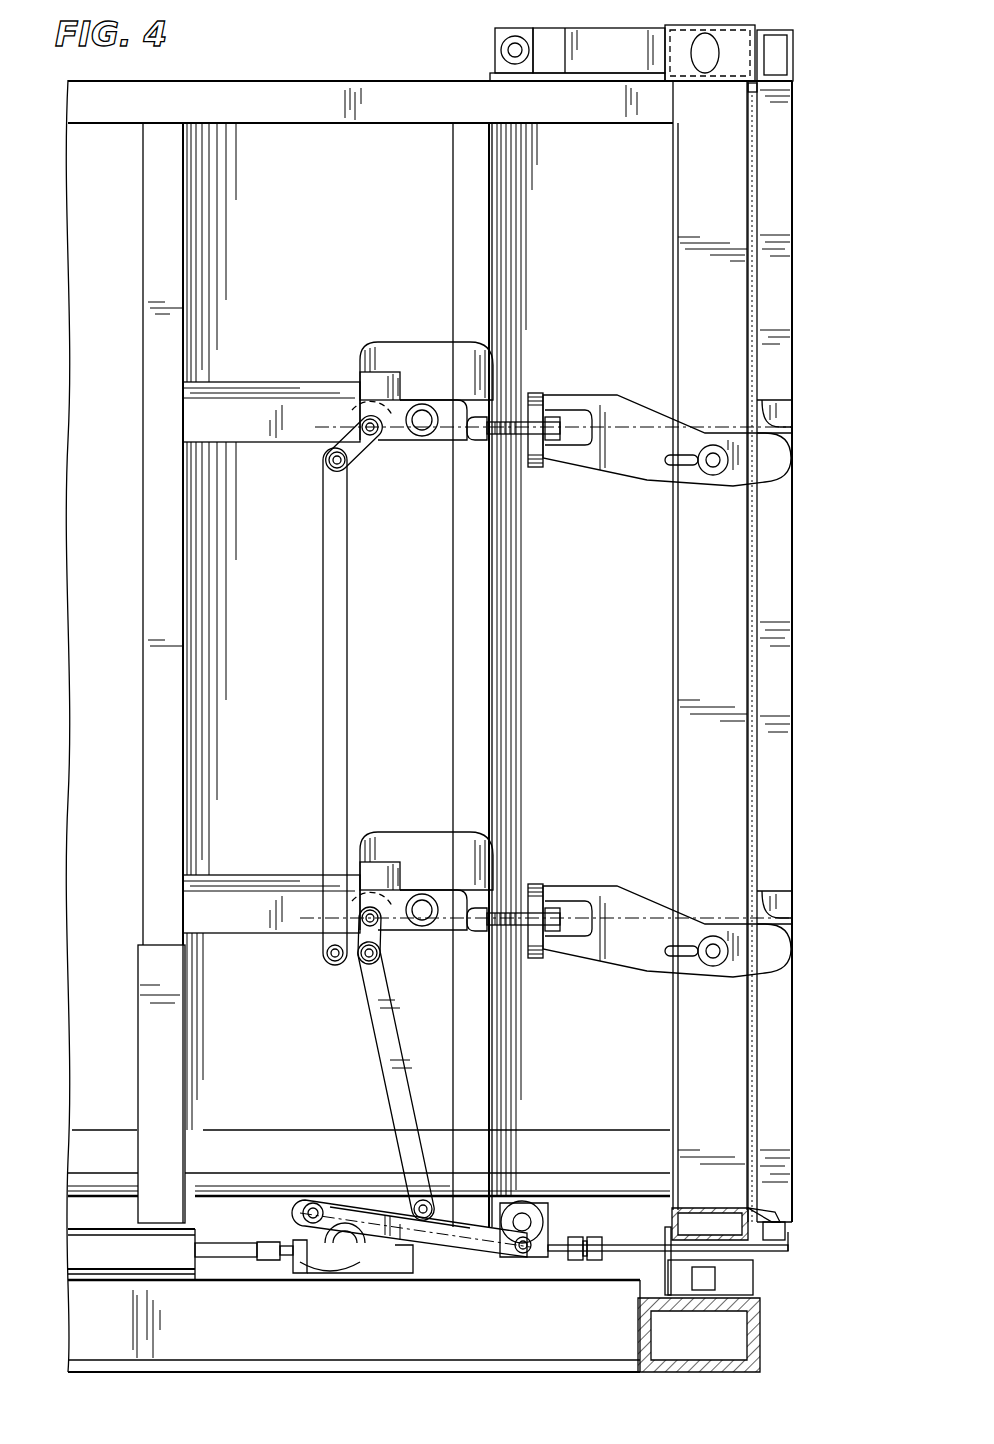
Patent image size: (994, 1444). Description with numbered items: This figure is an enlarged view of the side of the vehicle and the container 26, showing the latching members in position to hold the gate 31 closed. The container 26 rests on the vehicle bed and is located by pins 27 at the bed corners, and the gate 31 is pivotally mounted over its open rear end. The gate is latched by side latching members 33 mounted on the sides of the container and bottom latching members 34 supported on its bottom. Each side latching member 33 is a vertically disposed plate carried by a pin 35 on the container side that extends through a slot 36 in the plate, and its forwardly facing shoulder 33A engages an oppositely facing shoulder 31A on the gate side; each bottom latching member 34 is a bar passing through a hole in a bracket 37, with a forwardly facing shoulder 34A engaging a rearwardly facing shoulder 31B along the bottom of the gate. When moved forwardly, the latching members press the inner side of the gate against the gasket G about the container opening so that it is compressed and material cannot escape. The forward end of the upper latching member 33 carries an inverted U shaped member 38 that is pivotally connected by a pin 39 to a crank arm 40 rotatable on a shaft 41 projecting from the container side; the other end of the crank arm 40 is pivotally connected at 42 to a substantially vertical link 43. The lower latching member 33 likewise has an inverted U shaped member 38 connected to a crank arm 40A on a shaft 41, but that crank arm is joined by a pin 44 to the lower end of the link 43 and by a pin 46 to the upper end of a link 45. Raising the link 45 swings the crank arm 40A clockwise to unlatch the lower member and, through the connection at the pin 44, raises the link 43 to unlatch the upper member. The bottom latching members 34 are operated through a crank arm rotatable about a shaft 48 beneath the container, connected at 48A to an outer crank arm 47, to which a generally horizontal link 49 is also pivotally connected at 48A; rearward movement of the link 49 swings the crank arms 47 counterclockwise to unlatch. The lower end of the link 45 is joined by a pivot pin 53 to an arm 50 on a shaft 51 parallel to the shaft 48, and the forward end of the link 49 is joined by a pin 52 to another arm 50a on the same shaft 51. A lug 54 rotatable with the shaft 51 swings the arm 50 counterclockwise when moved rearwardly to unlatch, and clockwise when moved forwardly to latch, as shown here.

The container 26 is at (417, 81).
The pins 27 is at (718, 1280).
The gate 31 is at (794, 664).
The shoulders on the sides of the gate 31A is at (792, 431).
The rearwardly facing shoulders 31B is at (788, 1240).
The side latching members 33 is at (620, 483).
The forwardly facing shoulders 33A is at (768, 400).
The bottom latching members 34 is at (788, 1251).
The forwardly facing shoulders 34A is at (782, 1224).
The pin 35 is at (713, 475).
The slot 36 is at (688, 454).
The bracket 37 is at (662, 1224).
The inverted U shaped member 38 is at (483, 345).
The pin 39 is at (366, 420).
The crank arm 40 is at (398, 442).
The crank arm 40A is at (410, 932).
The shaft 41 is at (432, 438).
The pivotal connection 42 is at (329, 461).
The vertical link 43 is at (322, 620).
The pin 44 is at (328, 957).
The link 45 is at (404, 1080).
The pin 46 is at (378, 953).
The crank arm 47 is at (541, 1204).
The shaft 48 is at (522, 1200).
The connection 48A is at (523, 1254).
The horizontal link 49 is at (440, 1247).
The arm 50 is at (383, 1190).
The arm 50a is at (312, 1276).
The shaft 51 is at (352, 1200).
The pin 52 is at (310, 1203).
The pivot pin 53 is at (432, 1205).
The lug 54 is at (343, 1264).
The gasket G is at (760, 1200).